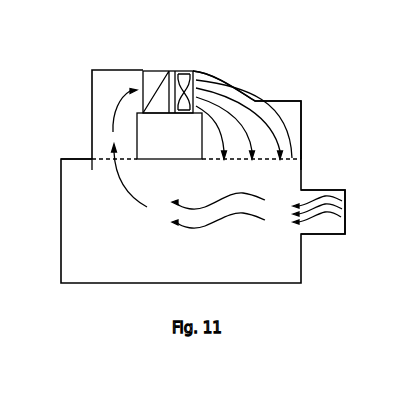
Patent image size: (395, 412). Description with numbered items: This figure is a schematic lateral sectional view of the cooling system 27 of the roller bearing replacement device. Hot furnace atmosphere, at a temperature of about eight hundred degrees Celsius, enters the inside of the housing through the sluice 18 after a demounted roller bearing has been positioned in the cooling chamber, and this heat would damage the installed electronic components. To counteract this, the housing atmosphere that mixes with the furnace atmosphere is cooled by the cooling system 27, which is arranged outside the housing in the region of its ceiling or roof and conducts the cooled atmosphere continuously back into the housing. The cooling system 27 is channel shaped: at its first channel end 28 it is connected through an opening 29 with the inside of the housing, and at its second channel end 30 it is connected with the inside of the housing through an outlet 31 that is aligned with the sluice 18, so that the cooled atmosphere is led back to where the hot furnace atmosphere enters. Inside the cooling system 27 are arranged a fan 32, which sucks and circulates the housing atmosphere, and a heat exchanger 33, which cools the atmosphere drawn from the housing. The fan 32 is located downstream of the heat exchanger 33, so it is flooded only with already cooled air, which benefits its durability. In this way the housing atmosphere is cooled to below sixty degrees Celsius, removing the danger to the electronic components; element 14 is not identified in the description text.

The fan unit housing 14 is at (33, 143).
The sluice 18 is at (317, 235).
The cooling system 27 is at (169, 46).
The first channel end 28 is at (77, 153).
The opening 29 is at (99, 158).
The second channel end 30 is at (313, 157).
The outlet 31 is at (302, 123).
The fan 32 is at (200, 72).
The heat exchanger 33 is at (138, 78).